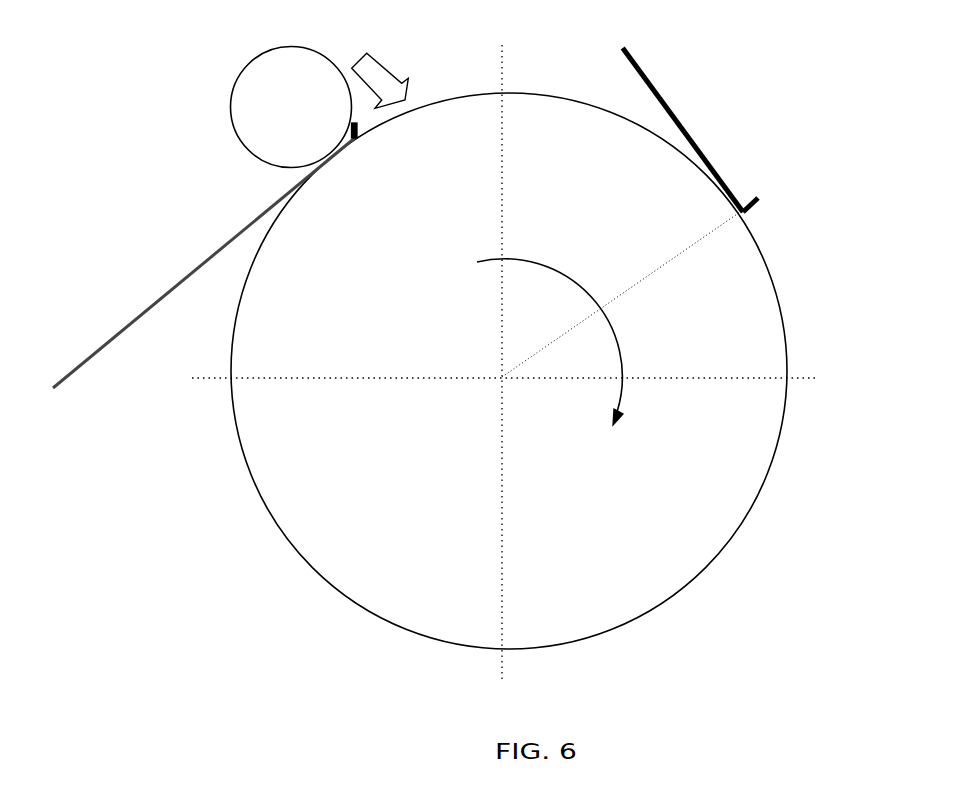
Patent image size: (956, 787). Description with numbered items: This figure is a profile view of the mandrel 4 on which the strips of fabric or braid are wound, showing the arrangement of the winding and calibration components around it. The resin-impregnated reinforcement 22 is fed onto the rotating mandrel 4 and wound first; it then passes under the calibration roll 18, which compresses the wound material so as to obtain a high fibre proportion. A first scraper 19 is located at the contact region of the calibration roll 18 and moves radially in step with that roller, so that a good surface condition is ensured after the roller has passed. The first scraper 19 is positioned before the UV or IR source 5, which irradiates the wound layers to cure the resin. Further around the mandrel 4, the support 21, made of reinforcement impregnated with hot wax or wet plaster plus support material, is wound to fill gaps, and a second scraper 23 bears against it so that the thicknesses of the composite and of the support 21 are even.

The mandrel 4 is at (337, 543).
The UV or IR source 5 is at (365, 55).
The calibration roll 18 is at (255, 83).
The first scraper 19 is at (356, 130).
The support 21 is at (670, 108).
The resin-impregnated reinforcement 22 is at (202, 258).
The second scraper 23 is at (738, 210).